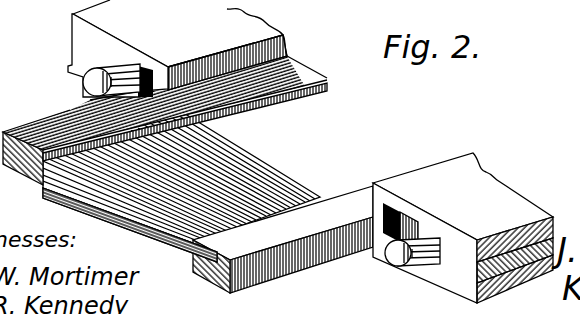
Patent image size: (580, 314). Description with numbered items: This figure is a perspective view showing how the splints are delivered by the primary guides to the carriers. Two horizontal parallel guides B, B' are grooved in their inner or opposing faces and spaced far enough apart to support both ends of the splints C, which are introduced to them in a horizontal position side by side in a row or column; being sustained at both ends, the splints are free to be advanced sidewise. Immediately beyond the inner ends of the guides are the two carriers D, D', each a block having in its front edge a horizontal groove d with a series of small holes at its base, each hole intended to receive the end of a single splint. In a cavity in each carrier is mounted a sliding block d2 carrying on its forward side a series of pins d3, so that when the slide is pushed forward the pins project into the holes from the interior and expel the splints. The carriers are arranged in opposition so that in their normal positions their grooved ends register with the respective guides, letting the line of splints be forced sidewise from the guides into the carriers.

The horizontal guide B is at (208, 239).
The horizontal guide B' is at (165, 120).
The splints C is at (33, 230).
The carrier D is at (177, 50).
The carrier D' is at (463, 228).
The horizontal groove d is at (326, 84).
The sliding block d2 is at (274, 158).
The pins d3 is at (88, 88).